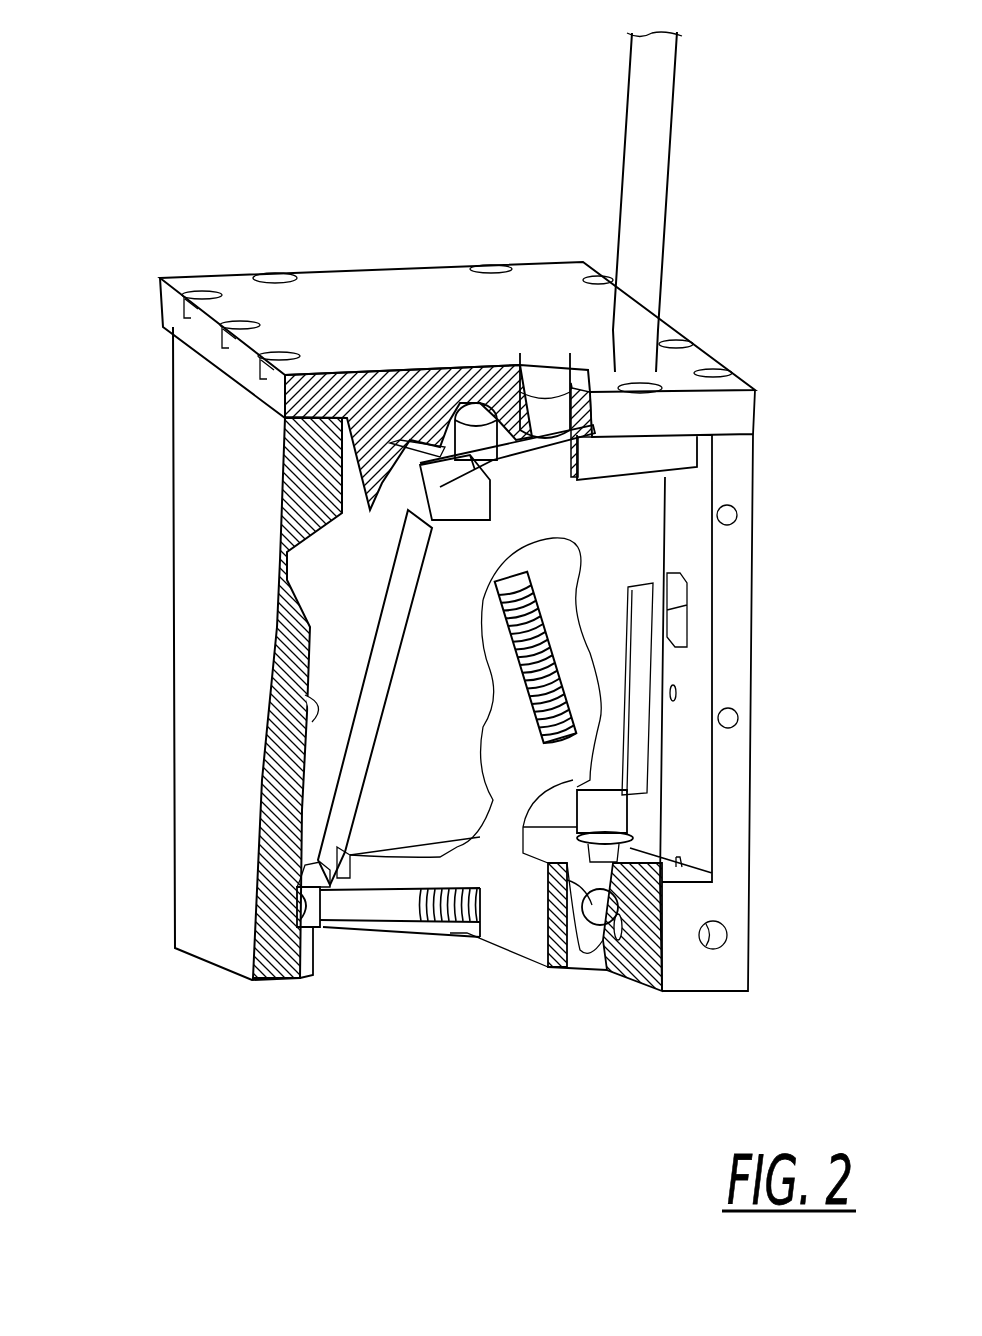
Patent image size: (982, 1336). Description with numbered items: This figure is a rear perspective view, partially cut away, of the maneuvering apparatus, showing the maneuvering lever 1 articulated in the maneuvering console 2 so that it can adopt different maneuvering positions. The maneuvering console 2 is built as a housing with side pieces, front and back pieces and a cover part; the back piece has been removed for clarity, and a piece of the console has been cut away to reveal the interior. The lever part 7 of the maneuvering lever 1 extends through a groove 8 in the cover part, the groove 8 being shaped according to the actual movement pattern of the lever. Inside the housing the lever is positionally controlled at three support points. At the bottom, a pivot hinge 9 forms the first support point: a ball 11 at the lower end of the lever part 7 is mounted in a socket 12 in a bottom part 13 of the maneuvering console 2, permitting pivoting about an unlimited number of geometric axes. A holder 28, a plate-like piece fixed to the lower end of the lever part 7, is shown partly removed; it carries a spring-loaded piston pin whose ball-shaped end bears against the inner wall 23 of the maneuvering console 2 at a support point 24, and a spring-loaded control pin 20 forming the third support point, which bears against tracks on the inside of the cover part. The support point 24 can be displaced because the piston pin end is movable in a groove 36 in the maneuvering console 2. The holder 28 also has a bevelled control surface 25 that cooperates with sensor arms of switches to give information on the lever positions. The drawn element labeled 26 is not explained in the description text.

The maneuvering lever 1 is at (680, 176).
The maneuvering console 2 is at (160, 742).
The lever part 7 is at (645, 275).
The groove 8 is at (590, 336).
The pivot hinge 9 is at (580, 932).
The ball 11 is at (593, 908).
The socket 12 is at (590, 907).
The bottom part 13 is at (695, 968).
The control pin 20 is at (312, 918).
The inner wall 23 is at (323, 707).
The support point 24 is at (307, 890).
The bevelled control surface 25 is at (380, 490).
The bearing 26 is at (297, 863).
The holder 28 is at (350, 670).
The groove 36 is at (310, 978).